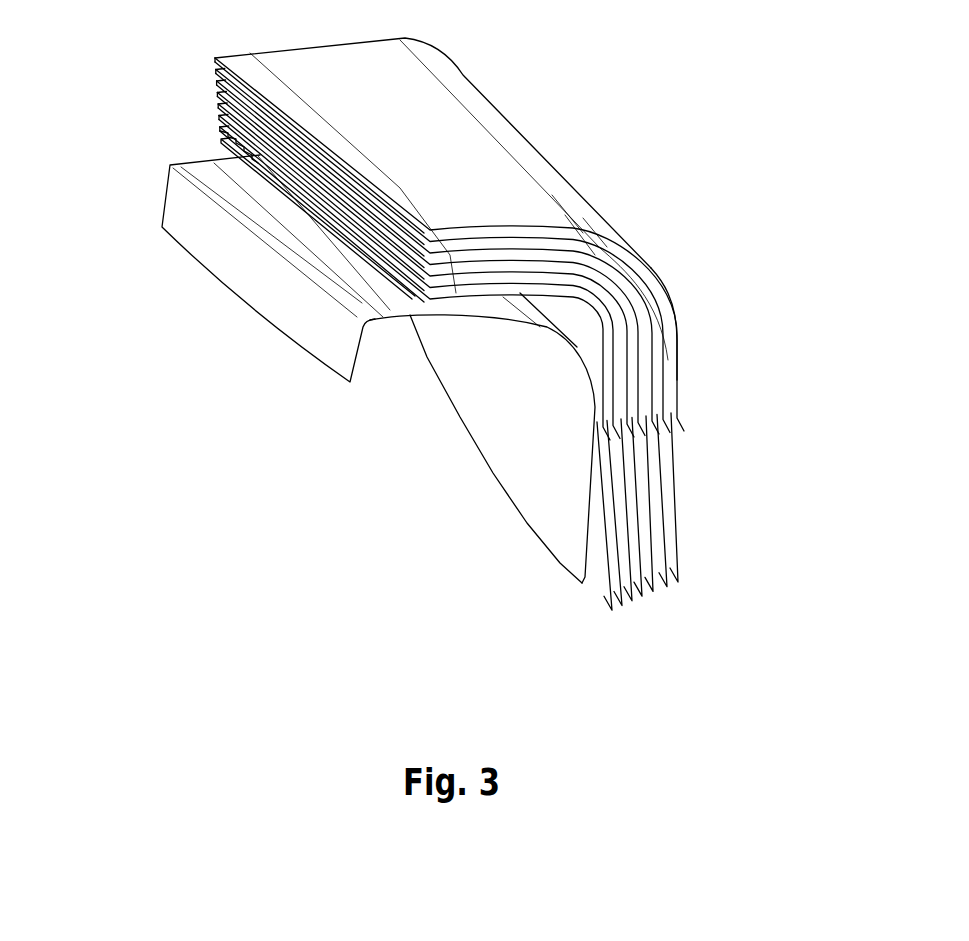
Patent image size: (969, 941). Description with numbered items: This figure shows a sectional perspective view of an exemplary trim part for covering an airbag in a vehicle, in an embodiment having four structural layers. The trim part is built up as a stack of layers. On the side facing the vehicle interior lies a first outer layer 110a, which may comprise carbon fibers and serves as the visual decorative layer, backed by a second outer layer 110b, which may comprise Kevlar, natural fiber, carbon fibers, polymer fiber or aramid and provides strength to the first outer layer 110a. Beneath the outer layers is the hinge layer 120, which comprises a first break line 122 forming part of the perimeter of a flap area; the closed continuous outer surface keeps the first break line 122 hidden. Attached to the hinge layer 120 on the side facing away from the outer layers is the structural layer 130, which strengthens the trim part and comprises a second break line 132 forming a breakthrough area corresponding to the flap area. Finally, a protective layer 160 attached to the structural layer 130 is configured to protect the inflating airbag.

The first outer layer 110a is at (651, 260).
The second outer layer 110b is at (670, 340).
The hinge layer 120 is at (445, 337).
The first break line 122 is at (257, 118).
The structural layer 130 is at (582, 572).
The second break line 132 is at (257, 167).
The protective layer 160 is at (333, 370).